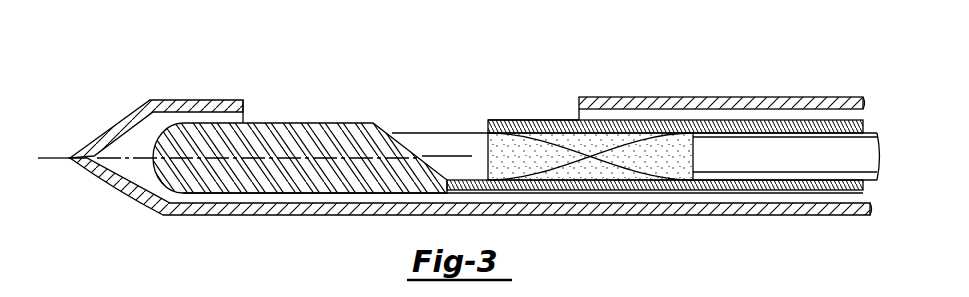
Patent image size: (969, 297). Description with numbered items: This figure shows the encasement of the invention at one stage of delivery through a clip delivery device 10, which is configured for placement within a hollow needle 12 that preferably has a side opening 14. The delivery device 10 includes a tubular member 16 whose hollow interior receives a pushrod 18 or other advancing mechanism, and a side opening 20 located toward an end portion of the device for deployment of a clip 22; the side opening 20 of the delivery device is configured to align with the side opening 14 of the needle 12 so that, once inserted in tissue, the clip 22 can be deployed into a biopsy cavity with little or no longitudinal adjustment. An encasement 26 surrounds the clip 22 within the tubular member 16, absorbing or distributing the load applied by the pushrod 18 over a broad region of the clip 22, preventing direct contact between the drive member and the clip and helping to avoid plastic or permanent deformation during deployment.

The clip delivery device 10 is at (297, 123).
The hollow needle 12 is at (287, 216).
The side opening 14 is at (402, 75).
The tubular member 16 is at (770, 182).
The pushrod 18 is at (768, 152).
The side opening 20 is at (467, 133).
The clip 22 is at (587, 158).
The encasement 26 is at (548, 142).